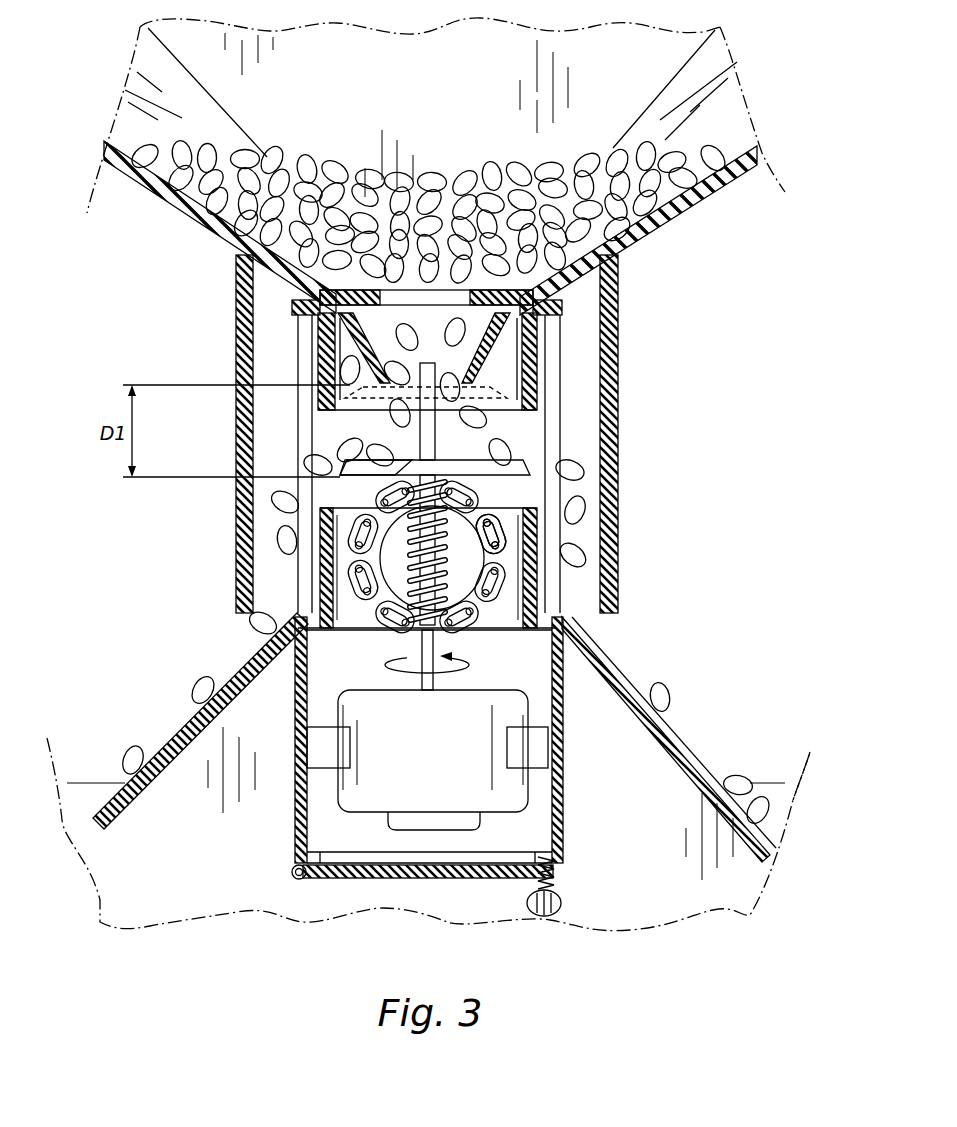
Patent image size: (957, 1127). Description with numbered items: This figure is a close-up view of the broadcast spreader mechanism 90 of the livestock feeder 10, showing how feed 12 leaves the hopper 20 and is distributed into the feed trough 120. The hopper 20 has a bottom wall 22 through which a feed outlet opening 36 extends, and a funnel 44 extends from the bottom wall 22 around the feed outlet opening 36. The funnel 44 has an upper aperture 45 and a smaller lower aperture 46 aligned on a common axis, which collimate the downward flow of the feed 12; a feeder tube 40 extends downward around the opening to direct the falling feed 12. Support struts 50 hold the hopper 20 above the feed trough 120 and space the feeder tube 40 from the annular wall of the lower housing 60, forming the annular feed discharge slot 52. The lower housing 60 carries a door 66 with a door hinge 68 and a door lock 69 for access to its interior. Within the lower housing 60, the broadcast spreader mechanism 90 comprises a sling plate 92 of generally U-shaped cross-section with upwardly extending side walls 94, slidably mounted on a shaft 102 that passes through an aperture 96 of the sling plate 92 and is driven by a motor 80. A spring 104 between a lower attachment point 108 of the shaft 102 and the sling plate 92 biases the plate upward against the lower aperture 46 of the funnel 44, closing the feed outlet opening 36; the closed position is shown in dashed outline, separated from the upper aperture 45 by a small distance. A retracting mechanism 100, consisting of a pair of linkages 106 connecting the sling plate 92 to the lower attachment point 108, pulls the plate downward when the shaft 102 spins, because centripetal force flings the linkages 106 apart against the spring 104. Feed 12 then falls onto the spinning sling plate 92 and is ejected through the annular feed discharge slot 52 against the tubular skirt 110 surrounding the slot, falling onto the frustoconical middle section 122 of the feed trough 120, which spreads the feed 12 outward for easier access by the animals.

The livestock feeder 10 is at (78, 73).
The feed 12 is at (270, 150).
The hopper 20 is at (140, 172).
The bottom wall 22 is at (638, 230).
The feed outlet opening 36 is at (530, 333).
The feeder tube 40 is at (530, 380).
The funnel 44 is at (545, 352).
The upper aperture 45 is at (345, 352).
The lower aperture 46 is at (345, 392).
The support struts 50 is at (292, 305).
The annular feed discharge slot 52 is at (548, 471).
The lower housing 60 is at (295, 822).
The door 66 is at (437, 880).
The door hinge 68 is at (292, 873).
The door lock 69 is at (562, 902).
The motor 80 is at (530, 788).
The broadcast spreader mechanism 90 is at (495, 507).
The sling plate 92 is at (345, 470).
The side walls 94 is at (425, 462).
The aperture 96 is at (512, 522).
The retracting mechanism 100 is at (280, 556).
The shaft 102 is at (500, 435).
The spring 104 is at (410, 568).
The linkages 106 is at (534, 578).
The lower attachment point 108 is at (566, 662).
The tubular skirt 110 is at (578, 441).
The feed trough 120 is at (771, 742).
The frustoconical middle section 122 is at (692, 757).